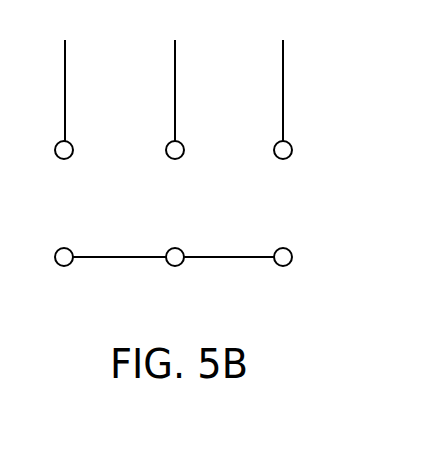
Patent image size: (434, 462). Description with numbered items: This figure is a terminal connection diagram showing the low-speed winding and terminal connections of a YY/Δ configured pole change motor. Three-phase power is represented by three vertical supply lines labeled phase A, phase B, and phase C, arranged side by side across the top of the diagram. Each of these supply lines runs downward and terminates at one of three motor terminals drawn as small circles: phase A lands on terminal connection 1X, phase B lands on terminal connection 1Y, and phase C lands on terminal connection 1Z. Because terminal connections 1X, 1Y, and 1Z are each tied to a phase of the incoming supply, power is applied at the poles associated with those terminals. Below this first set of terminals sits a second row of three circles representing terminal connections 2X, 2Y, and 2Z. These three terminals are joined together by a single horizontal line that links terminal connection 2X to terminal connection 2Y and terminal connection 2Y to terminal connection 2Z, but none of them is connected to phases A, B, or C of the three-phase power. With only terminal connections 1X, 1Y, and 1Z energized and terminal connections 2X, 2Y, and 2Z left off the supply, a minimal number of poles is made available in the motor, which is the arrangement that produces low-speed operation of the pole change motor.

The phase A is at (65, 76).
The phase B is at (175, 76).
The phase C is at (283, 76).
The terminal connection 1X is at (64, 167).
The terminal connection 1Y is at (174, 167).
The terminal connection 1Z is at (283, 167).
The terminal connection 2X is at (64, 243).
The terminal connection 2Y is at (175, 243).
The terminal connection 2Z is at (282, 243).